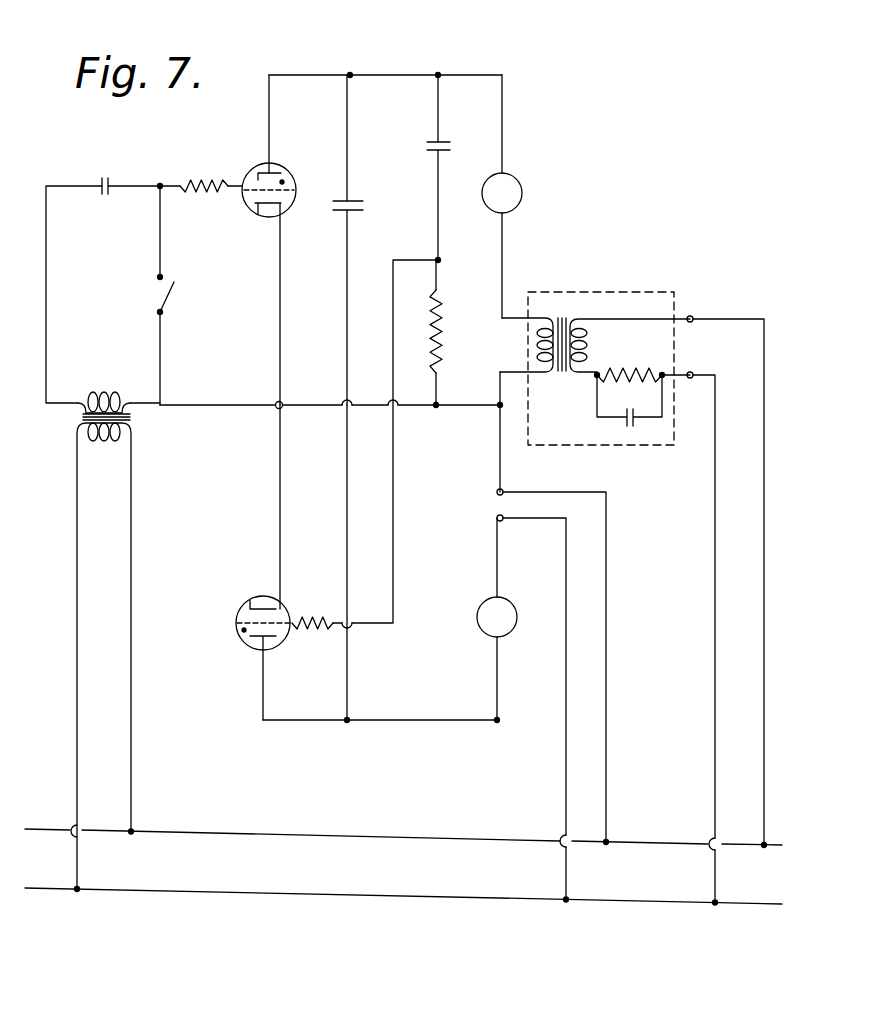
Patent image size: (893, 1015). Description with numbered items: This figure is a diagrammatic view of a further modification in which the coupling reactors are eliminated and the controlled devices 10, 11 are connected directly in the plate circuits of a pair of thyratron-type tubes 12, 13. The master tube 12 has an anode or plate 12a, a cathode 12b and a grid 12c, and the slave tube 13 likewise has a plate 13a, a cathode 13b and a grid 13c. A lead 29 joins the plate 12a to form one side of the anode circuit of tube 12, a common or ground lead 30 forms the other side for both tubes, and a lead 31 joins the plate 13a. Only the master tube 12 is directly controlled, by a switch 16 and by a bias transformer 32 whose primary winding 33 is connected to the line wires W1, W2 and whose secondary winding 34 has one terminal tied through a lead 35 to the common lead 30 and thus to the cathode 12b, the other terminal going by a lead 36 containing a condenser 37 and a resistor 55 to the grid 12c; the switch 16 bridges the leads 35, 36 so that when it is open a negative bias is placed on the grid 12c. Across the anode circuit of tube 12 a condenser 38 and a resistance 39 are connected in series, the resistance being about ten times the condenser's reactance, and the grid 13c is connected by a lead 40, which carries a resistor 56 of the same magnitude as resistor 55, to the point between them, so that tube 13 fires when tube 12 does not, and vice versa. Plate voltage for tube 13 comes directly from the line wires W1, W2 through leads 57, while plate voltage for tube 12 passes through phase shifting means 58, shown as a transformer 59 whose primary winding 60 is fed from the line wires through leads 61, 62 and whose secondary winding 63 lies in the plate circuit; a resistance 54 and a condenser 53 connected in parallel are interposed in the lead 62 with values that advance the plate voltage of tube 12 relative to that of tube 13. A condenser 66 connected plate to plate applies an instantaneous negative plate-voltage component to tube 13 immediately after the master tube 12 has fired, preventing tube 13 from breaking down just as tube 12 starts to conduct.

The device to be controlled 10 is at (522, 171).
The device to be controlled 11 is at (482, 636).
The master tube 12 is at (275, 240).
The anode or plate of tube 12 12a is at (260, 168).
The cathode of tube 12 12b is at (256, 215).
The grid of tube 12 12c is at (292, 195).
The slave tube 13 is at (249, 562).
The anode or plate of tube 13 13a is at (270, 642).
The cathode of tube 13 13b is at (264, 600).
The grid of tube 13 13c is at (236, 616).
The switch 16 is at (170, 296).
The lead 29 is at (478, 75).
The common lead 30 is at (350, 411).
The lead 31 is at (412, 722).
The transformer 32 is at (76, 620).
The primary winding 33 is at (104, 442).
The secondary winding 34 is at (94, 392).
The lead 35 is at (194, 404).
The lead 36 is at (56, 186).
The condenser 37 is at (108, 178).
The condenser 38 is at (452, 149).
The resistance 39 is at (442, 322).
The lead 40 is at (393, 540).
The capacitor 53 is at (633, 425).
The resistor 54 is at (628, 368).
The resistor 55 is at (196, 181).
The resistor 56 is at (312, 614).
The leads 57 is at (606, 720).
The phase shifting means 58 is at (593, 340).
The transformer 59 is at (589, 304).
The primary winding 60 is at (586, 346).
The lead 61 is at (764, 664).
The lead 62 is at (715, 690).
The secondary winding 63 is at (536, 346).
The condenser 66 is at (363, 210).
The line wire W1 is at (368, 822).
The line wire W2 is at (359, 916).